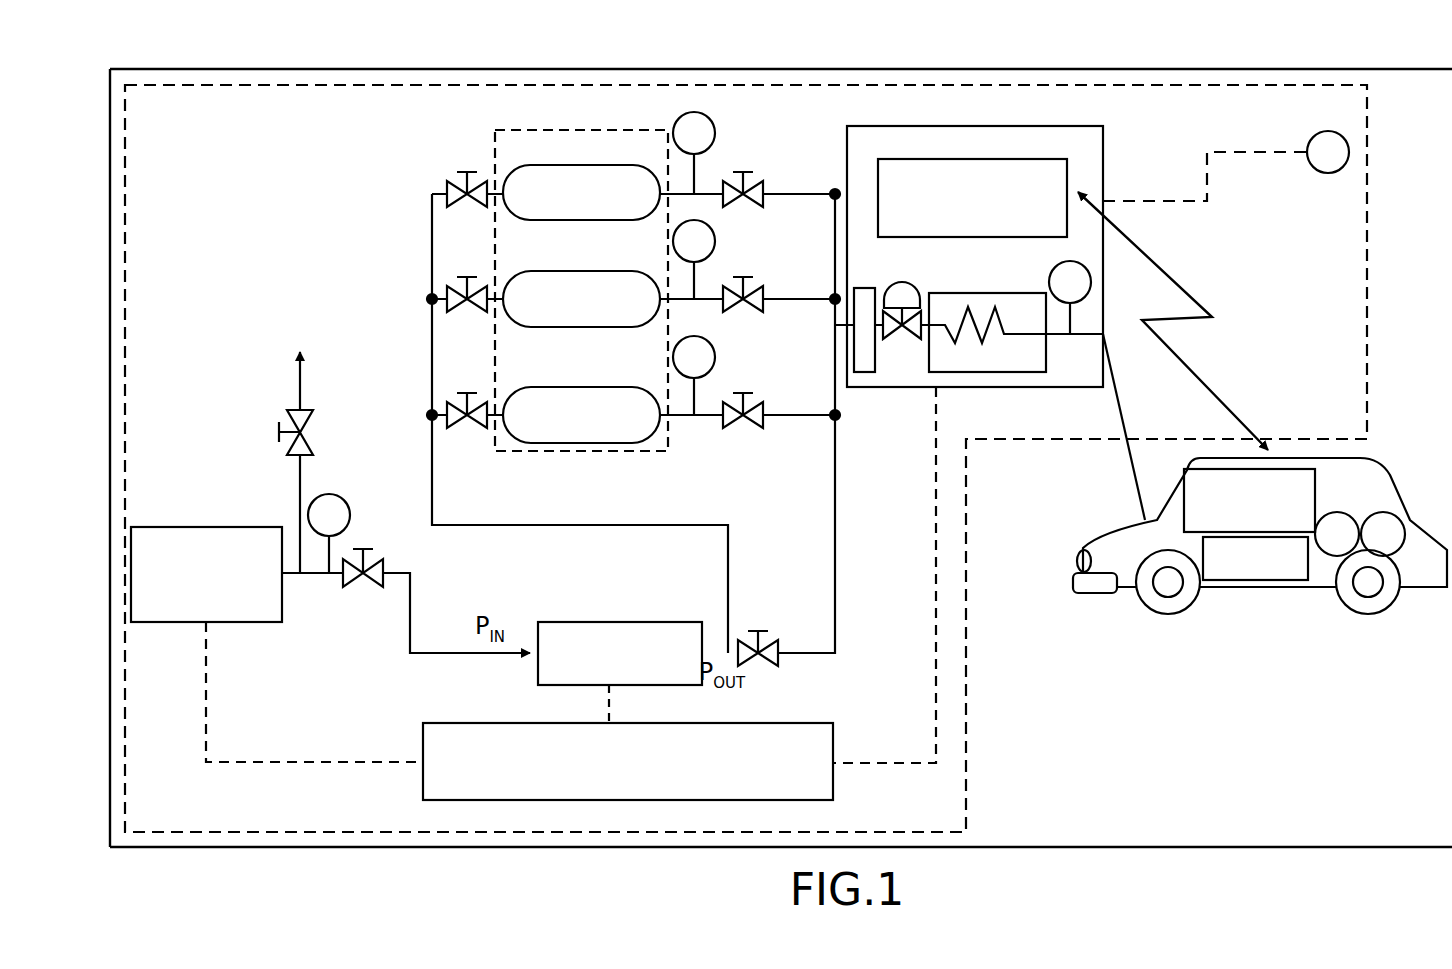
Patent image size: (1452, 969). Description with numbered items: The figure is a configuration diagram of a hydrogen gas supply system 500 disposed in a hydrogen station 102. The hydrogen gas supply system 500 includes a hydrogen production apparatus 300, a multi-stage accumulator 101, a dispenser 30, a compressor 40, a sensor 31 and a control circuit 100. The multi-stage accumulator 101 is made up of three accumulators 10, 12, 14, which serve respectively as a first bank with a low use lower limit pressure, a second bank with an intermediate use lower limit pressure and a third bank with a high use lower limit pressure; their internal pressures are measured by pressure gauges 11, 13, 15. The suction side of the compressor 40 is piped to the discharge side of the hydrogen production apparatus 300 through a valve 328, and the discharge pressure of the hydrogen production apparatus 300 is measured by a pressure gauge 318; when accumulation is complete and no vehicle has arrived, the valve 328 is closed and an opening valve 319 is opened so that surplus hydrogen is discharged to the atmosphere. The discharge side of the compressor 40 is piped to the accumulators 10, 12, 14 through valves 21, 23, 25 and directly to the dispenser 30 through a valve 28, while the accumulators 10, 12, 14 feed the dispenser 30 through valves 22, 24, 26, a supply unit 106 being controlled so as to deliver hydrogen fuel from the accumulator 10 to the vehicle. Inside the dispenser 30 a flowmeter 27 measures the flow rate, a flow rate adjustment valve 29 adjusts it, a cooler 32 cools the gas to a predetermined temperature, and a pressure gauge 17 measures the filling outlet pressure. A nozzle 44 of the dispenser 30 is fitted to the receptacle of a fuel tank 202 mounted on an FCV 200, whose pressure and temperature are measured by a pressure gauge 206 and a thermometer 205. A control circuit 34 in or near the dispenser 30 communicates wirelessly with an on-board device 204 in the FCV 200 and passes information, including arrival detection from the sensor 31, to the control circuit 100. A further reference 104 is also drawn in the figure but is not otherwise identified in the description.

The accumulator 10 is at (534, 176).
The pressure gauge 11 is at (716, 124).
The accumulator 12 is at (534, 273).
The pressure gauge 13 is at (716, 237).
The accumulator 14 is at (532, 389).
The pressure gauge 15 is at (716, 348).
The pressure gauge 17 is at (1092, 284).
The valve 21 is at (462, 168).
The valve 22 is at (748, 172).
The valve 23 is at (462, 312).
The valve 24 is at (748, 278).
The valve 25 is at (462, 428).
The valve 26 is at (748, 392).
The flowmeter 27 is at (864, 372).
The valve 28 is at (765, 630).
The flow rate adjustment valve 29 is at (893, 284).
The dispenser 30 is at (999, 278).
The sensor 31 is at (1350, 155).
The cooler 32 is at (1012, 372).
The control circuit 34 is at (1040, 159).
The compressor 40 is at (622, 622).
The nozzle 44 is at (1127, 427).
The control circuit 100 is at (790, 723).
The multi-stage accumulator 101 is at (536, 130).
The hydrogen station 102 is at (795, 69).
The hydrogen supply line 104 is at (416, 698).
The supply unit 106 is at (845, 574).
The FCV 200 is at (1260, 526).
The fuel tank 202 is at (1260, 583).
The on-board device 204 is at (1317, 510).
The thermometer 205 is at (1332, 557).
The pressure gauge 206 is at (1397, 557).
The hydrogen production apparatus 300 is at (212, 527).
The pressure gauge 318 is at (350, 518).
The opening valve 319 is at (313, 425).
The valve 328 is at (342, 582).
The hydrogen gas supply system 500 is at (932, 84).